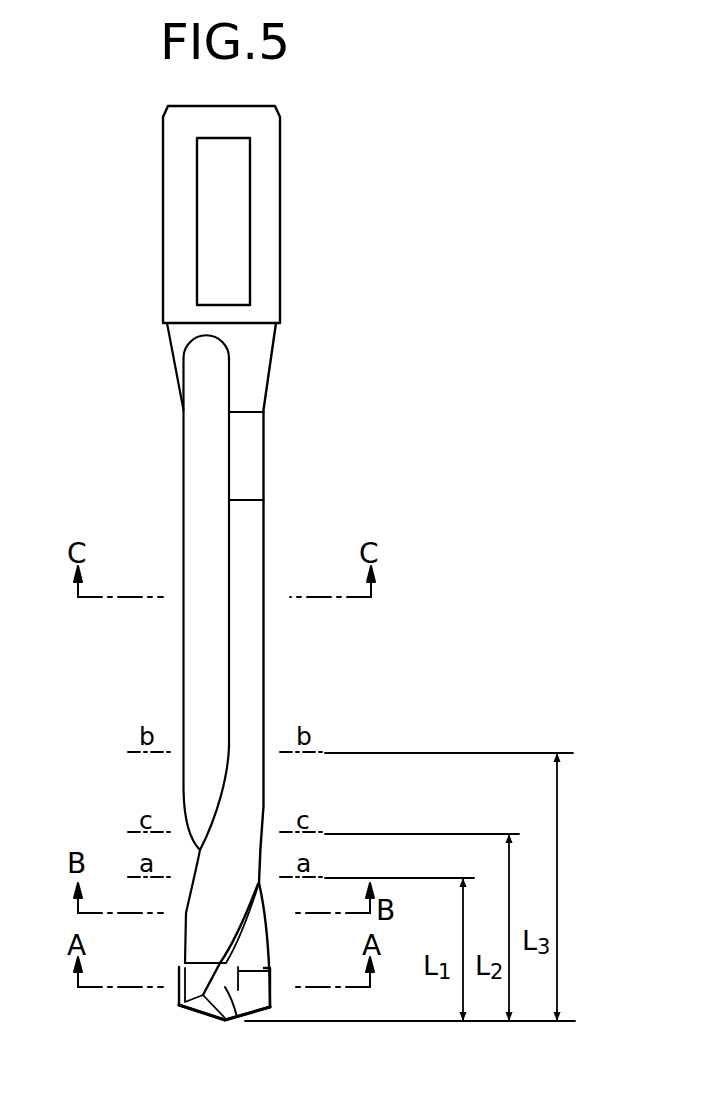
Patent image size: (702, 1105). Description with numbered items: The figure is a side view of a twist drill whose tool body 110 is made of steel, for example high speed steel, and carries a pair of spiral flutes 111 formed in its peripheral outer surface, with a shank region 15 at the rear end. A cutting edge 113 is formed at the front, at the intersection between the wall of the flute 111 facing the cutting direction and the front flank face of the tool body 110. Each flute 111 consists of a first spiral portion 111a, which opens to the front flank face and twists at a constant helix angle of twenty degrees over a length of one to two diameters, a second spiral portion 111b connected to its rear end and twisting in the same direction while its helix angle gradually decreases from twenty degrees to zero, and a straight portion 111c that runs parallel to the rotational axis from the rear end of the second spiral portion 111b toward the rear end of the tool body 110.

The shank head / mounting portion 15 is at (267, 296).
The tool body 110 is at (265, 531).
The spiral flute 111 is at (190, 521).
The first spiral portion 111a is at (256, 958).
The second spiral portion 111b is at (197, 788).
The straight portion 111c is at (195, 677).
The cutting edge 113 is at (255, 1017).